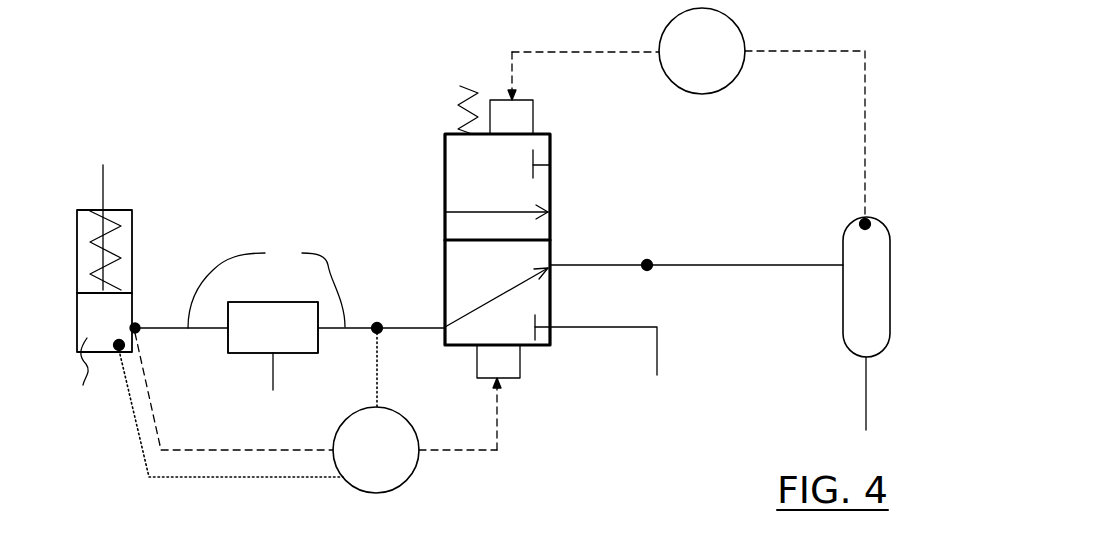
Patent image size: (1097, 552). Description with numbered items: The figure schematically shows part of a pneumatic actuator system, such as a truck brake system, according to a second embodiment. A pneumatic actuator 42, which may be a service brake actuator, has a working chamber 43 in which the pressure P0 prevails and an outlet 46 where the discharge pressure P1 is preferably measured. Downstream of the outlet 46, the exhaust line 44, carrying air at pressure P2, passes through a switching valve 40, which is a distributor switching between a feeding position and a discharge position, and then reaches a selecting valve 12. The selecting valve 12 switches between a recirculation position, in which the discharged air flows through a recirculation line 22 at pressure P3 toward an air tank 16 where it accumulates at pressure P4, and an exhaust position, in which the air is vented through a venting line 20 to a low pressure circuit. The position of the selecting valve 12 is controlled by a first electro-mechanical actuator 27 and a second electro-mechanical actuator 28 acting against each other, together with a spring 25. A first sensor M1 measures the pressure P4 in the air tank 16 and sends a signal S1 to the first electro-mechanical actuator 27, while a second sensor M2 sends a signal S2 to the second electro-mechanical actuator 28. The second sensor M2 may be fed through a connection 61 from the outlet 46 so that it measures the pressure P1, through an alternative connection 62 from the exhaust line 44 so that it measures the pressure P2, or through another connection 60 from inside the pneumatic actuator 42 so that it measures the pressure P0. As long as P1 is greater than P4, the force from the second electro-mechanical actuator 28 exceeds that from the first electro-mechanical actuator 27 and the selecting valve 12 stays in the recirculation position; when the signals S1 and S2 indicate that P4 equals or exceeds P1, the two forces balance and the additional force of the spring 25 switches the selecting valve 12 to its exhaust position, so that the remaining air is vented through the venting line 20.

The selecting valve 12 is at (388, 184).
The air tank 16 is at (866, 323).
The venting line 20 is at (611, 365).
The recirculation line 22 is at (866, 400).
The spring 25 is at (455, 107).
The first electro-mechanical actuator 27 is at (513, 122).
The second electro-mechanical actuator 28 is at (512, 370).
The switching valve 40 is at (273, 346).
The pneumatic actuator 42 is at (140, 207).
The working chamber 43 is at (83, 375).
The exhaust line 44 is at (266, 297).
The outlet 46 is at (138, 325).
The second pneumatic connection 60 is at (257, 477).
The second pneumatic connection 61 is at (282, 448).
The second pneumatic connection 62 is at (375, 404).
The pressure in the pneumatic actuator P0 is at (109, 334).
The pressure of the air discharged from the pneumatic actuator P1 is at (160, 348).
The pressure in the exhaust line P2 is at (386, 316).
The pressure of the air sent back into circulation P3 is at (663, 253).
The pressure in the air tank P4 is at (878, 214).
The signal S1 is at (527, 76).
The signal S2 is at (515, 414).
The first sensor M1 is at (688, 115).
The second sensor M2 is at (376, 450).